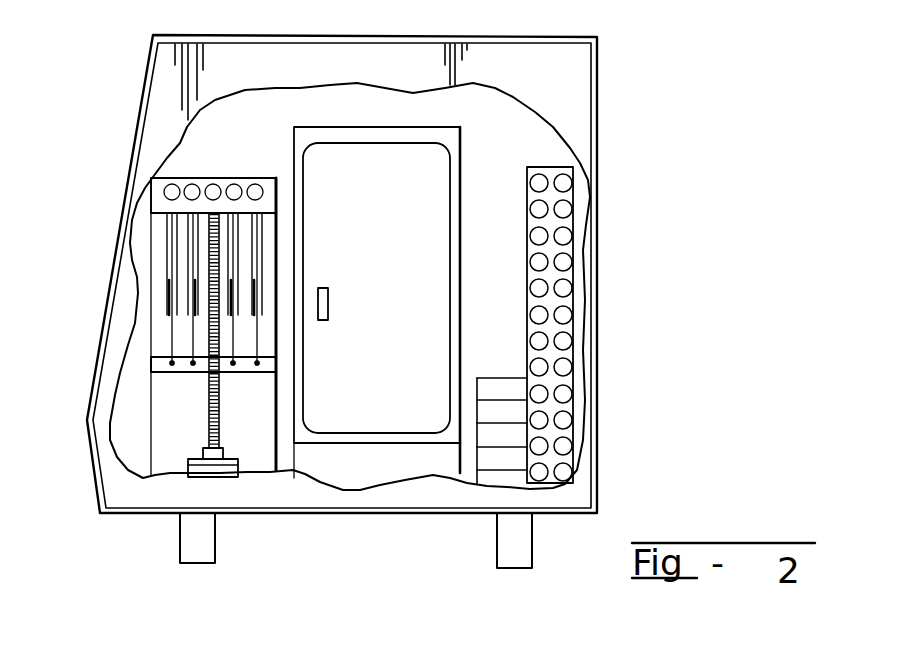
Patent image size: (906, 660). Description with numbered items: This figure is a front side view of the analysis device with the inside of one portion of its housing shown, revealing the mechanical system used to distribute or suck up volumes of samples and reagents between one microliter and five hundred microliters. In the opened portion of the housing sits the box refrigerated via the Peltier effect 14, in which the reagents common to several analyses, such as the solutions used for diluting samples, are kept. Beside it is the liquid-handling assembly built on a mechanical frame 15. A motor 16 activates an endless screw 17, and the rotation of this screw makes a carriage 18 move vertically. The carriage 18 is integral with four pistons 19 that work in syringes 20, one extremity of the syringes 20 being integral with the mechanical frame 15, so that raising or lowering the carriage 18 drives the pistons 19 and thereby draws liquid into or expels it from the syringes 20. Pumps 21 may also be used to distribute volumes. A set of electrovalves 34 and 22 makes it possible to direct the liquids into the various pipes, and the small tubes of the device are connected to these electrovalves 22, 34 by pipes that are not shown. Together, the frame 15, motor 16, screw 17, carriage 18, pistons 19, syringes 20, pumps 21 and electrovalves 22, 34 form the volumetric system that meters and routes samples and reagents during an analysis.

The box refrigerated via the Peltier effect 14 is at (382, 408).
The mechanical frame 15 is at (262, 448).
The motor 16 is at (187, 473).
The endless screw 17 is at (208, 405).
The carriage 18 is at (160, 358).
The pistons 19 is at (168, 328).
The syringes 20 is at (170, 227).
The pumps 21 is at (488, 453).
The electrovalves 22 is at (567, 317).
The electrovalves 34 is at (190, 190).